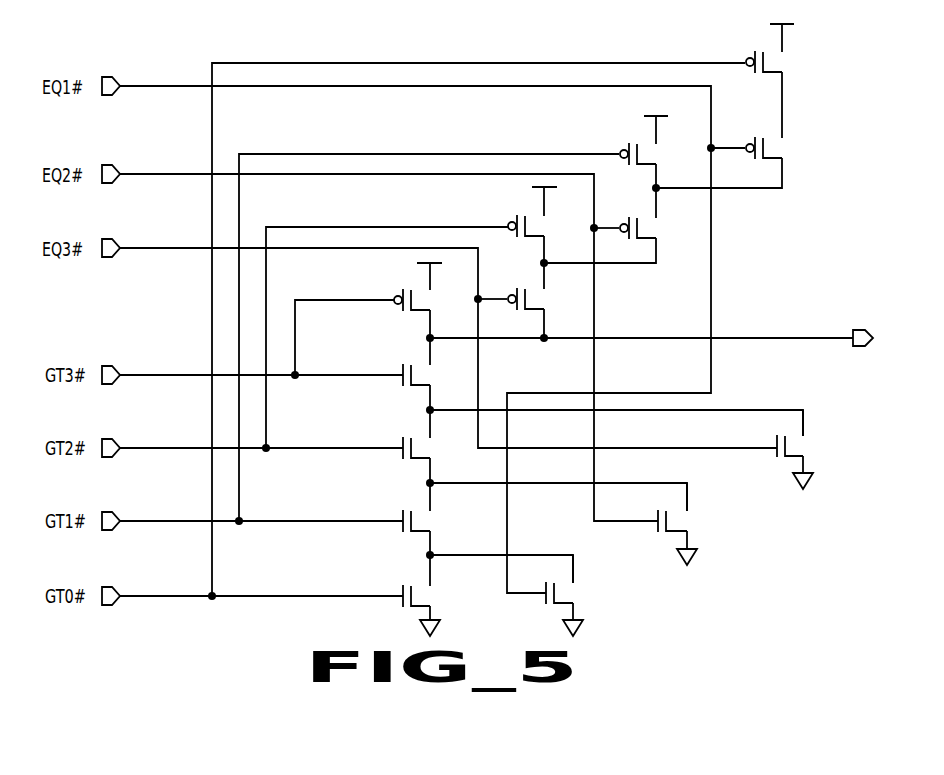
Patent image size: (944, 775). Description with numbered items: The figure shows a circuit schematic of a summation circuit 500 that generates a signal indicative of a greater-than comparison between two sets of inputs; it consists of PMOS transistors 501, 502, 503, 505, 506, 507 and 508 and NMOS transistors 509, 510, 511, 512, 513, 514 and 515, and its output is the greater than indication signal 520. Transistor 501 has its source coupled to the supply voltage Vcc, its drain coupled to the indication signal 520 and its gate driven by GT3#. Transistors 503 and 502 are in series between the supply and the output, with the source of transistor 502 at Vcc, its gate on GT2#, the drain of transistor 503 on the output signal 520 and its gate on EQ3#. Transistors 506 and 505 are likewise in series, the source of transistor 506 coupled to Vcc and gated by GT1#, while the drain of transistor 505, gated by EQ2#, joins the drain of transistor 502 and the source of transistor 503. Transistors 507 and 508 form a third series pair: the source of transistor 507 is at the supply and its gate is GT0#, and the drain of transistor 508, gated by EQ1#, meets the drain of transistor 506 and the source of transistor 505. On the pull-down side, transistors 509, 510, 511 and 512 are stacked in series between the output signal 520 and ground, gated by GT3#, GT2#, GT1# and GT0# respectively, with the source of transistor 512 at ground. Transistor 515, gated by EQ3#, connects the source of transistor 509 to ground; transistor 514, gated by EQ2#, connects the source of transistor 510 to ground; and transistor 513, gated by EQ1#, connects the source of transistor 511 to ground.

The summation circuit 500 is at (281, 55).
The PMOS transistor 501 is at (425, 301).
The PMOS transistor 502 is at (539, 227).
The PMOS transistor 503 is at (539, 300).
The PMOS transistor 505 is at (651, 229).
The PMOS transistor 506 is at (651, 155).
The PMOS transistor 507 is at (777, 63).
The PMOS transistor 508 is at (777, 149).
The NMOS transistor 509 is at (425, 376).
The NMOS transistor 510 is at (425, 449).
The NMOS transistor 511 is at (425, 521).
The NMOS transistor 512 is at (425, 595).
The NMOS transistor 513 is at (568, 594).
The NMOS transistor 514 is at (681, 523).
The NMOS transistor 515 is at (797, 447).
The greater than indication signal 520 is at (815, 341).